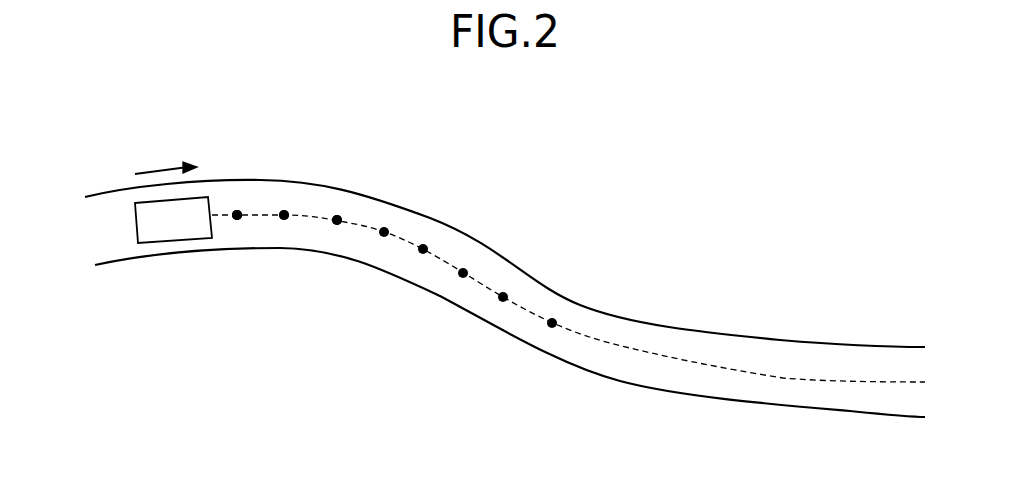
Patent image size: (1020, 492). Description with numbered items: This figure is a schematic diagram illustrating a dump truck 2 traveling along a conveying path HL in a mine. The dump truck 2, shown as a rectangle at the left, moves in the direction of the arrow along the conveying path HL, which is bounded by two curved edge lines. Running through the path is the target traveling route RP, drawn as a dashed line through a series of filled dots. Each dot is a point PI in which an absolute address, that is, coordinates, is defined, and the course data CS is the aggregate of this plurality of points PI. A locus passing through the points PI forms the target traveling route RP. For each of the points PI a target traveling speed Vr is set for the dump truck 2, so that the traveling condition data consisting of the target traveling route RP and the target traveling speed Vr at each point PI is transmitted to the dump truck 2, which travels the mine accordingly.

The dump truck 2 is at (175, 243).
The point PI is at (237, 210).
The target traveling speed Vr is at (237, 220).
The target traveling route RP is at (484, 286).
The course data CS is at (607, 342).
The conveying path HL is at (687, 345).